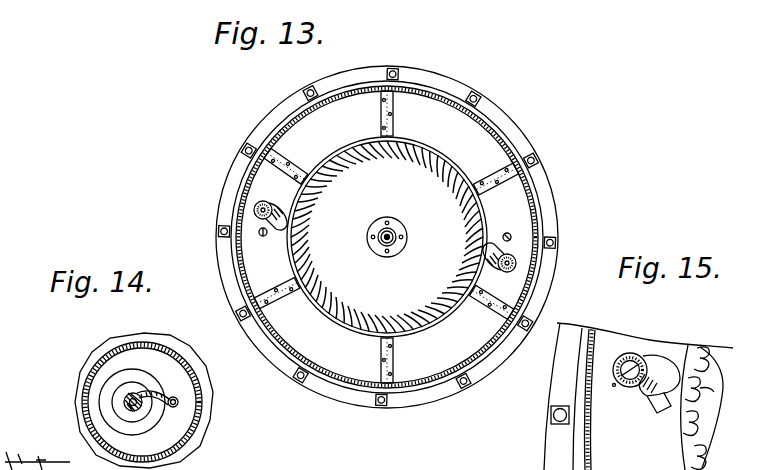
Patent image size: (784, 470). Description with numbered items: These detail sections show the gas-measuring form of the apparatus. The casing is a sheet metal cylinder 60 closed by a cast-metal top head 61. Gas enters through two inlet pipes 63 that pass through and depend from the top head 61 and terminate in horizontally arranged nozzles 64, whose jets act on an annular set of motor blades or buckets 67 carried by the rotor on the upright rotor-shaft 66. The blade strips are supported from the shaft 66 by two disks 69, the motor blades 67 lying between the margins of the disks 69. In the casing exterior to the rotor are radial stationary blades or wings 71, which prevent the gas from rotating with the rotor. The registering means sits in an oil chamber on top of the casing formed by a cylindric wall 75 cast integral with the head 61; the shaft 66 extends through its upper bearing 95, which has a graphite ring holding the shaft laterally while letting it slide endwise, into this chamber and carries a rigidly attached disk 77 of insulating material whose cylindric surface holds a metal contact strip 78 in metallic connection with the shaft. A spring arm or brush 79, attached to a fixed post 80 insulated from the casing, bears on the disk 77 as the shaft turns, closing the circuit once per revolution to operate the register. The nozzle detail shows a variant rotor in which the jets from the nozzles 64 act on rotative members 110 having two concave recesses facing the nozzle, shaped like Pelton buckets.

In FIG. 13, the sheet metal cylinder 60 is at (485, 127).
In FIG. 14, the top head 61 is at (172, 343).
In FIG. 13, the inlet pipe 63 is at (385, 236).
In FIG. 15, the inlet pipe 63 is at (632, 353).
In FIG. 13, the nozzle 64 is at (384, 233).
In FIG. 15, the nozzle 64 is at (604, 394).
In FIG. 13, the rotor-shaft 66 is at (390, 240).
In FIG. 14, the rotor-shaft 66 is at (131, 403).
In FIG. 15, the rotor-shaft 66 is at (603, 332).
In FIG. 13, the motor blades 67 is at (463, 185).
In FIG. 13, the disk 69 is at (387, 237).
In FIG. 13, the stationary blades 71 is at (391, 113).
In FIG. 14, the cylindric wall 75 is at (123, 348).
In FIG. 14, the disk 77 is at (125, 402).
In FIG. 14, the metal contact strip 78 is at (150, 411).
In FIG. 14, the spring arm 79 is at (152, 393).
In FIG. 14, the post 80 is at (178, 400).
In FIG. 14, the bearing 95 is at (160, 413).
In FIG. 15, the rotative members 110 is at (706, 424).